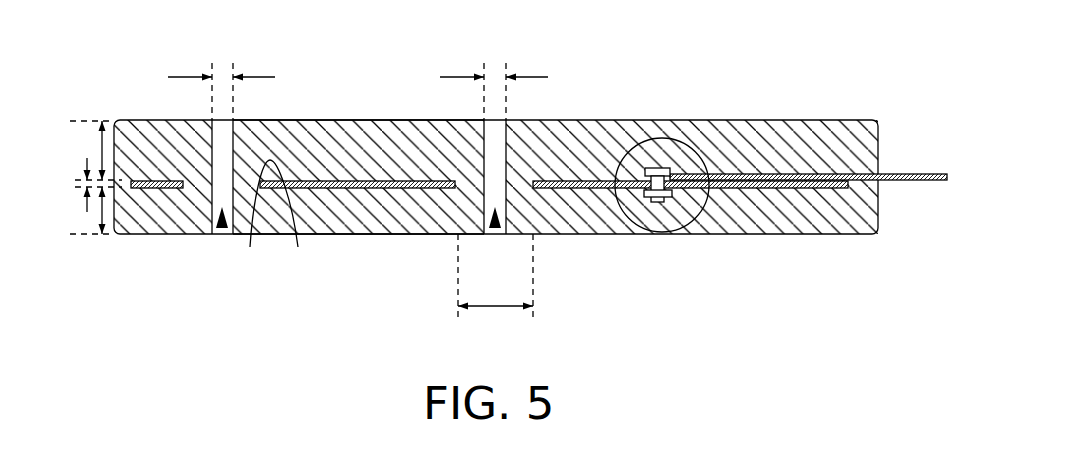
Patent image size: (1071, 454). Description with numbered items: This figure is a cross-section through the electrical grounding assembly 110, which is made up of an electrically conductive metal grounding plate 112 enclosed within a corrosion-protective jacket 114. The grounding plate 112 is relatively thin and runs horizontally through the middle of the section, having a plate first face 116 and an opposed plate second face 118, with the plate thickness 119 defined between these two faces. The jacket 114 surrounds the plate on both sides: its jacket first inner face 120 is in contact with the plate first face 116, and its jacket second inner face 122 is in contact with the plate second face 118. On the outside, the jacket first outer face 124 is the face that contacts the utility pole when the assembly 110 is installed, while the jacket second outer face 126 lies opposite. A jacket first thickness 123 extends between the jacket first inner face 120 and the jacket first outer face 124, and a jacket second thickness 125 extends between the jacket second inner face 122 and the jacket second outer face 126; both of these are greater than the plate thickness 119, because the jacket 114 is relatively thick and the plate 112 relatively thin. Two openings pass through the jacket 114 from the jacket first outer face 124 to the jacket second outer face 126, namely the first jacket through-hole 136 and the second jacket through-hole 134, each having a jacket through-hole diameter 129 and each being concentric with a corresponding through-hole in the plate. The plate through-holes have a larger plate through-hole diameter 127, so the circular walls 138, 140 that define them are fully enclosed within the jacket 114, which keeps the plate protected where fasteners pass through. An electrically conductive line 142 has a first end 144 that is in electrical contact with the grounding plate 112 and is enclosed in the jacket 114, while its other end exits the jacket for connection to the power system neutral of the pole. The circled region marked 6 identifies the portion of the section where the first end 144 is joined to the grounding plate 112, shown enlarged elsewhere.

The electrical grounding assembly 110 is at (858, 56).
The grounding plate 112 is at (298, 247).
The corrosion-protective jacket 114 is at (130, 228).
The plate first face 116 is at (406, 172).
The plate second face 118 is at (427, 188).
The plate thickness 119 is at (87, 162).
The jacket first inner face 120 is at (353, 193).
The jacket second inner face 122 is at (250, 247).
The jacket first thickness 123 is at (100, 150).
The jacket first outer face 124 is at (247, 120).
The jacket second thickness 125 is at (100, 213).
The jacket second outer face 126 is at (377, 235).
The plate through-hole diameter 127 is at (495, 308).
The jacket through-hole diameter 129 is at (182, 77).
The second jacket through-hole 134 is at (222, 228).
The first jacket through-hole 136 is at (495, 230).
The circular wall 138 is at (183, 187).
The circular wall 140 is at (459, 184).
The electrically conductive line 142 is at (896, 182).
The first end 144 is at (921, 163).
The detail region of FIG. 6 is at (688, 218).